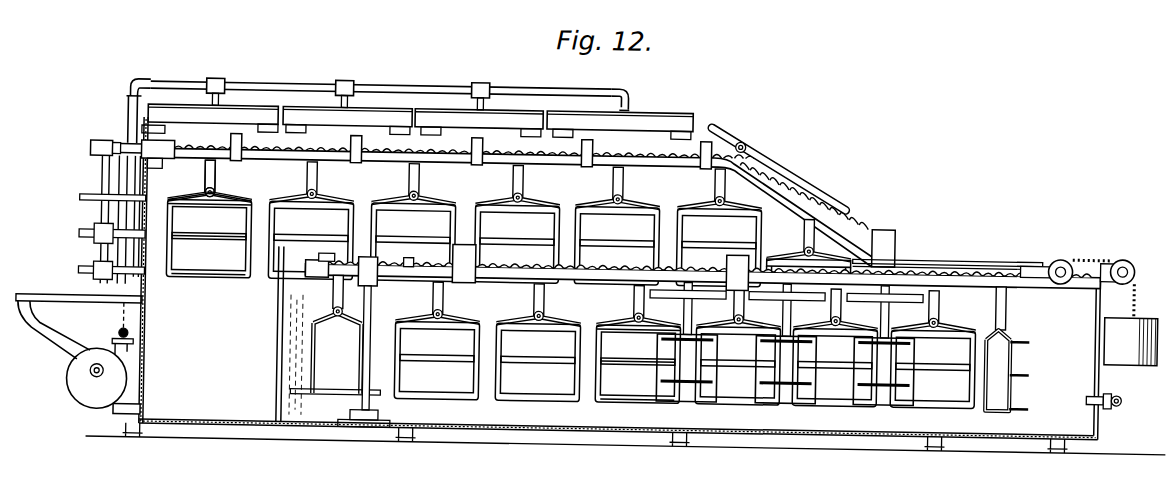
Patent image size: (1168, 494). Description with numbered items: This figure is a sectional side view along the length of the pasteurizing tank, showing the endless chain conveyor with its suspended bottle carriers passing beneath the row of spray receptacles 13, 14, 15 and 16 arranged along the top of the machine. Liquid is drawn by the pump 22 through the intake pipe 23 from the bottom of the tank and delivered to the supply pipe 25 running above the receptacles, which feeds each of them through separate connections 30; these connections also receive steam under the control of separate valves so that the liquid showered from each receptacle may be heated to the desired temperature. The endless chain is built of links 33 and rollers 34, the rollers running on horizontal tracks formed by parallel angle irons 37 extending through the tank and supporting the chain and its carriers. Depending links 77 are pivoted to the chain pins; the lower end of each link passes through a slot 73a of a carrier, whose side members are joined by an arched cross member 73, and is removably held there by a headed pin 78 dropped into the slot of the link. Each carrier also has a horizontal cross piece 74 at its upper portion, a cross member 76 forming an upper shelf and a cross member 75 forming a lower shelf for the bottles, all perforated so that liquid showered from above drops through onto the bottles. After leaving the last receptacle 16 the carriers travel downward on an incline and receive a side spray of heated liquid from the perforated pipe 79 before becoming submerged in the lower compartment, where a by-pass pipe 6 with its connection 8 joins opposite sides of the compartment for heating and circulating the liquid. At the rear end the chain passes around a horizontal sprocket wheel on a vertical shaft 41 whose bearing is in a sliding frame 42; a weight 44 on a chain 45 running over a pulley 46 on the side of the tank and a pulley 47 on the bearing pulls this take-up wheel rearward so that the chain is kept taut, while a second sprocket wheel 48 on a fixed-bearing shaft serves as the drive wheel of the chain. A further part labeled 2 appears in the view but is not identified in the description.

The casing 2 is at (277, 344).
The by-pass pipe 6 is at (1122, 388).
The connection 8 is at (1087, 390).
The receptacle 13 is at (213, 118).
The receptacle 14 is at (347, 120).
The receptacle 15 is at (479, 123).
The receptacle 16 is at (620, 125).
The pump 22 is at (72, 355).
The intake pipe 23 is at (118, 422).
The supply pipe 25 is at (424, 83).
The connections 30 is at (222, 102).
The links 33 is at (296, 150).
The rollers 34 is at (111, 148).
The angle irons 37 is at (382, 166).
The vertical shaft 41 is at (373, 322).
The sliding frame 42 is at (988, 262).
The weight 44 is at (1131, 342).
The chain 45 is at (1090, 251).
The pulley 46 is at (1125, 251).
The pulley 47 is at (1060, 252).
The sprocket wheel 48 is at (413, 271).
The arched cross member 73 is at (233, 205).
The slot 73a is at (204, 186).
The horizontal cross piece 74 is at (423, 278).
The cross member 75 is at (216, 281).
The cross member 76 is at (216, 246).
The depending links 77 is at (216, 180).
The pin 78 is at (203, 199).
The pipe 79 is at (810, 182).